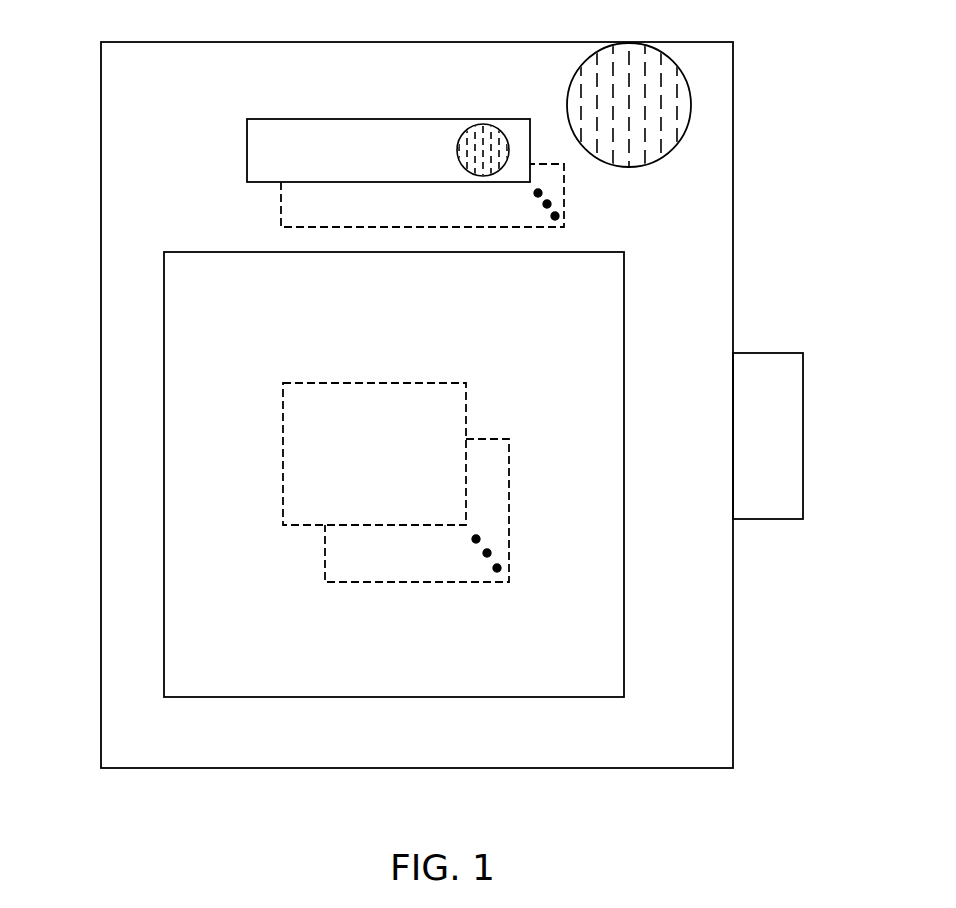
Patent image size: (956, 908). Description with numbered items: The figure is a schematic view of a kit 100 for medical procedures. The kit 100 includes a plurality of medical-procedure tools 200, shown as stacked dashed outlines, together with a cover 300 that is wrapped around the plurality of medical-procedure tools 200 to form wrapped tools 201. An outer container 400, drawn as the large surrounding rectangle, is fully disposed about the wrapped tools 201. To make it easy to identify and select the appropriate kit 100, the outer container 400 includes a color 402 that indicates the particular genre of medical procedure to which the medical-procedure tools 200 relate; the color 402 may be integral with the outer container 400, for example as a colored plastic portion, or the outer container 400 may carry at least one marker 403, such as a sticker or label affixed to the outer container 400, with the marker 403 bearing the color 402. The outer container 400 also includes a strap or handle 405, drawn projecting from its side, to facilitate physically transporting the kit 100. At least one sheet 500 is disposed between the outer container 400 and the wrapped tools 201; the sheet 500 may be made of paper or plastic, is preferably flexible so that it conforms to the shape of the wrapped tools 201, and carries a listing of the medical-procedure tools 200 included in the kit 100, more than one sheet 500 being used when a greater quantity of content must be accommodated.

The kit 100 is at (750, 752).
The medical-procedure tools 200 is at (393, 465).
The wrapped tools 201 is at (213, 699).
The cover 300 is at (598, 699).
The outer container 400 is at (101, 735).
The color 402 is at (665, 148).
The marker 403 is at (570, 86).
The strap or handle 405 is at (768, 352).
The sheet 500 is at (390, 117).